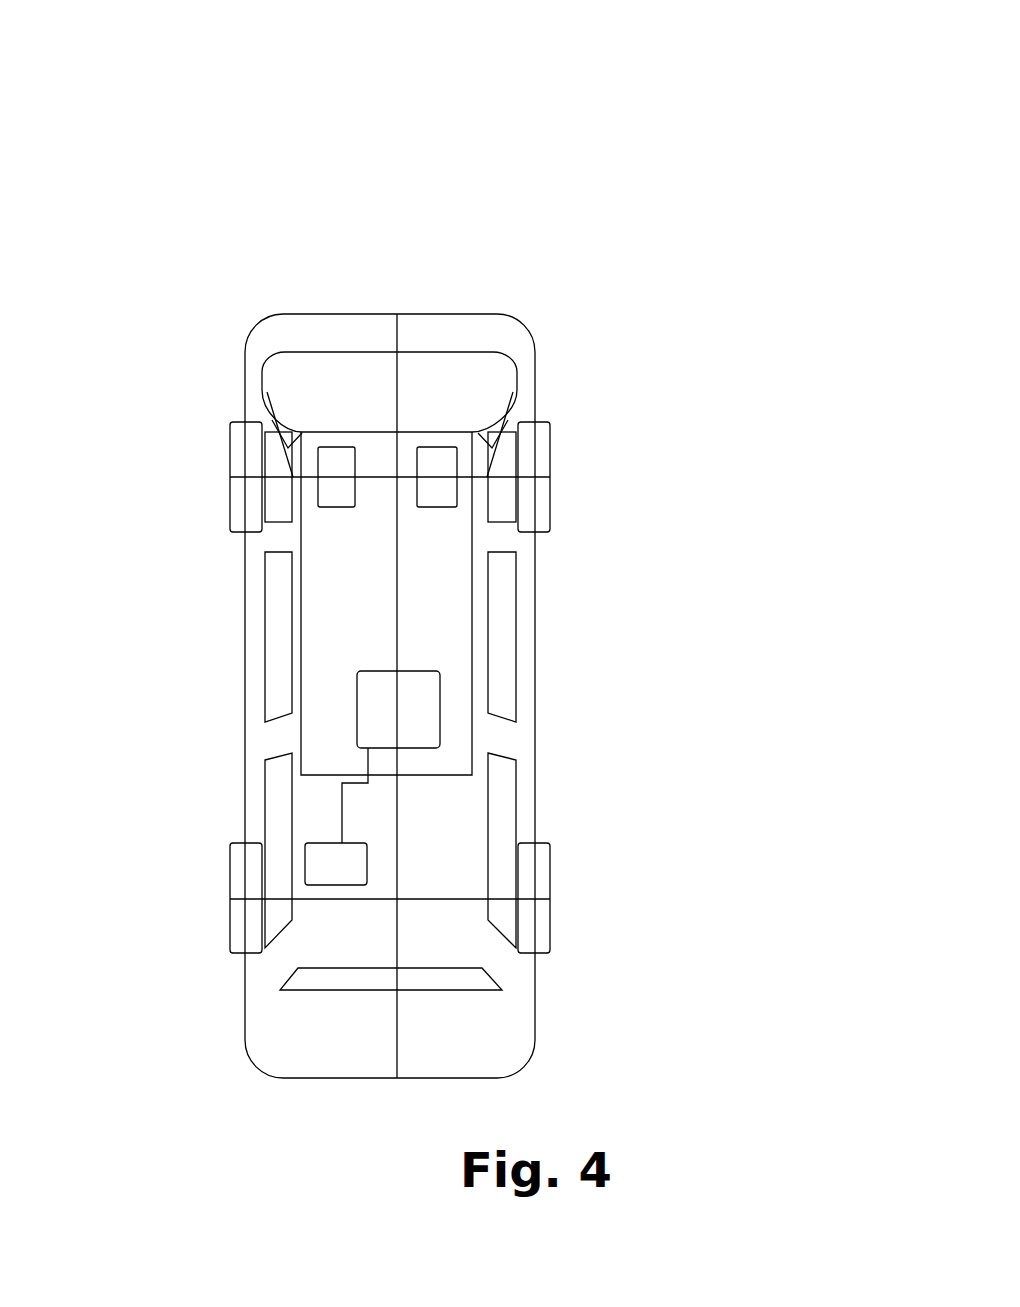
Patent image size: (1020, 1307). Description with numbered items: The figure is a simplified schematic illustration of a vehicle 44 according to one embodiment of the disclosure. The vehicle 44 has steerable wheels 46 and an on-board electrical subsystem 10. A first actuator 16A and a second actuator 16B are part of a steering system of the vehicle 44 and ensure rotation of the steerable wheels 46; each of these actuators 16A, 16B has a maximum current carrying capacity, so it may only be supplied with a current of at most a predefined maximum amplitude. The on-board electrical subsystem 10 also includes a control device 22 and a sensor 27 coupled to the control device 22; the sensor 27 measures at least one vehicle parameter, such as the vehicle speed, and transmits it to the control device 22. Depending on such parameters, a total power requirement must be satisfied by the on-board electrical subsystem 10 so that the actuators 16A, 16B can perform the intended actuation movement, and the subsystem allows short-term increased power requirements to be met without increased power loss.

The vehicle 44 is at (500, 195).
The steerable wheels 46 is at (550, 510).
The on-board electrical subsystem 10 is at (300, 733).
The first actuator 16A is at (457, 447).
The second actuator 16B is at (318, 447).
The control device 22 is at (372, 668).
The sensor 27 is at (323, 887).